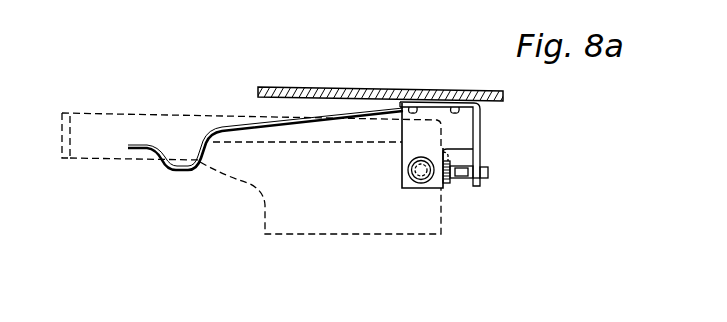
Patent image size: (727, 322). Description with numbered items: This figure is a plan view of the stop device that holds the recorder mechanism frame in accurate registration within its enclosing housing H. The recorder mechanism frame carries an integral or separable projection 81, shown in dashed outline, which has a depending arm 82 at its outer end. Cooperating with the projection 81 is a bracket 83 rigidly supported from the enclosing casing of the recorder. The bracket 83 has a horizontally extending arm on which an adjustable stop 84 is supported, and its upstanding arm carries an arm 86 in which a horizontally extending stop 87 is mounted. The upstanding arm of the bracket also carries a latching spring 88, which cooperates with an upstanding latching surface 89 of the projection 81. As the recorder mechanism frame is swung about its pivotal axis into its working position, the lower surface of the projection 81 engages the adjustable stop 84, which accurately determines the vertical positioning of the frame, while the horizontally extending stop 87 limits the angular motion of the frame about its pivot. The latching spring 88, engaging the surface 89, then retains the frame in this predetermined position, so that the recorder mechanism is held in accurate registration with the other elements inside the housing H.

The enclosing housing H is at (404, 70).
The projection 81 is at (141, 121).
The depending arm 82 is at (67, 162).
The bracket 83 is at (463, 130).
The adjustable stop 84 is at (418, 184).
The arm 86 is at (475, 153).
The horizontally extending stop 87 is at (452, 185).
The latching spring 88 is at (170, 173).
The latching surface 89 is at (240, 158).